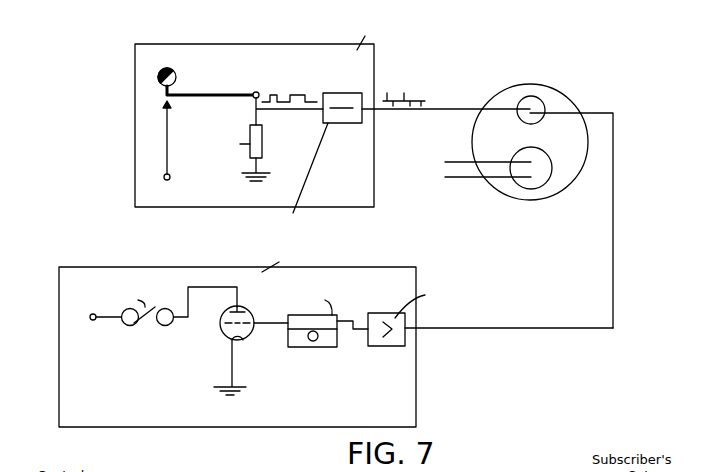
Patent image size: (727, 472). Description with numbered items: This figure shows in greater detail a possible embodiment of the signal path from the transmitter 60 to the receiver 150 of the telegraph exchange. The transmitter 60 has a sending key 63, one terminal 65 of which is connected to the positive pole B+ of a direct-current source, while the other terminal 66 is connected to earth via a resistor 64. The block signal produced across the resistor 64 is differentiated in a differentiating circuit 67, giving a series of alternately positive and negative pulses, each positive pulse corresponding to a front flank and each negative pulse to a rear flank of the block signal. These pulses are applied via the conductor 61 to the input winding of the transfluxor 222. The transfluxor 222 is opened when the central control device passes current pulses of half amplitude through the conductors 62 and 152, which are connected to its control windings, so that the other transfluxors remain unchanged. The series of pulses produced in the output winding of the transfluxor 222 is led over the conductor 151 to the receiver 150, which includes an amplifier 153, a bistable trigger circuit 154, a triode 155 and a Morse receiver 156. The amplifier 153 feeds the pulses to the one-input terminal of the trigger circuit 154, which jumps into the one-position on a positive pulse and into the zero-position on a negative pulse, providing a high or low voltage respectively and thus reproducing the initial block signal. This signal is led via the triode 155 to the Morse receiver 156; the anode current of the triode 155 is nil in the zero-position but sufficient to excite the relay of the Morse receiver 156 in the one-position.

The transmitter 60 is at (356, 68).
The conductor 61 is at (449, 103).
The conductor 62 is at (452, 162).
The sending key 63 is at (223, 88).
The resistor 64 is at (262, 146).
The terminal 65 is at (170, 104).
The terminal 66 is at (259, 95).
The differentiating circuit 67 is at (352, 123).
The receiver 150 is at (400, 291).
The conductor 151 is at (605, 113).
The conductor 152 is at (455, 177).
The amplifier 153 is at (387, 347).
The bistable trigger circuit 154 is at (320, 347).
The triode 155 is at (247, 340).
The Morse receiver 156 is at (147, 324).
The transfluxor 222 is at (529, 201).